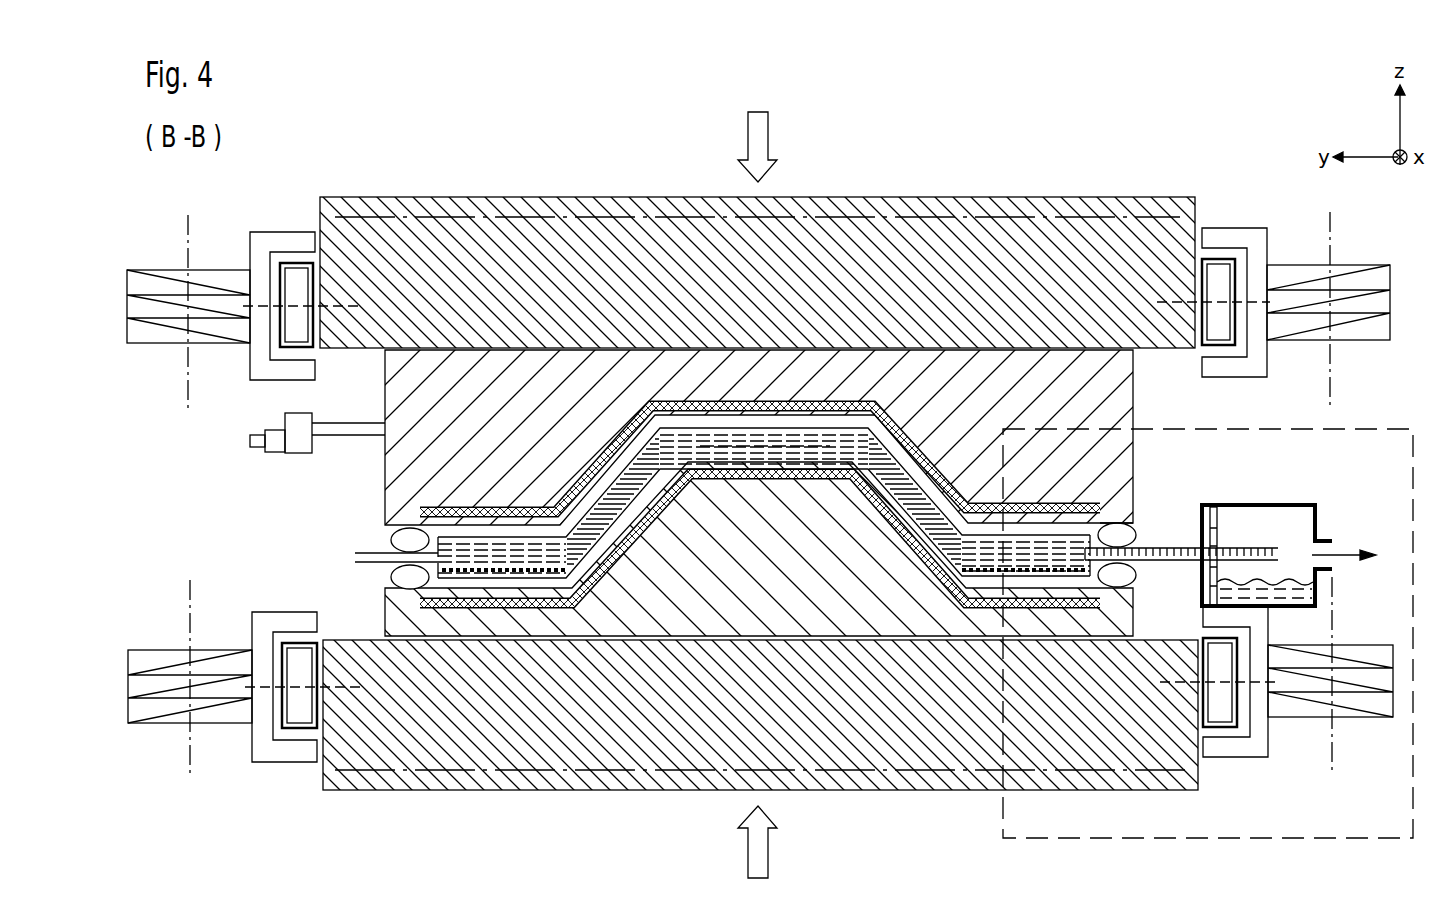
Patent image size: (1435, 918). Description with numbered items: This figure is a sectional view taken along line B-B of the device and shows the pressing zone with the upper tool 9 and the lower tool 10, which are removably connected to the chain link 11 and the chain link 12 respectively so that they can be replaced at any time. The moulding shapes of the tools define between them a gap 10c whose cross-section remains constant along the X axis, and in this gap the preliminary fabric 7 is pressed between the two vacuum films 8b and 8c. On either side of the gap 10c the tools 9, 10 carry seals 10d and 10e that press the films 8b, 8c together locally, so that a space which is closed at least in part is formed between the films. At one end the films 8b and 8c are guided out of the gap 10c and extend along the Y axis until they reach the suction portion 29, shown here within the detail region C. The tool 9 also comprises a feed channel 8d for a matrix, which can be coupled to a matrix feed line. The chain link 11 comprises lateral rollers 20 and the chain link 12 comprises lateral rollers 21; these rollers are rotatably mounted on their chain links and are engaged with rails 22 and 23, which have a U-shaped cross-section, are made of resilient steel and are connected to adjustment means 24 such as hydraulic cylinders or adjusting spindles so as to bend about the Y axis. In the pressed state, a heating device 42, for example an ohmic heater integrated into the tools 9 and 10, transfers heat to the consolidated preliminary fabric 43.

The chain link 11 is at (885, 205).
The chain link 12 is at (890, 778).
The tool 9 is at (1118, 386).
The tool 10 is at (1125, 605).
The preliminary fabric 7 is at (498, 555).
The heating device 42 is at (430, 512).
The consolidated preliminary fabric 43 is at (733, 440).
The vacuum film 8b is at (360, 553).
The vacuum film 8c is at (360, 562).
The feed channel 8d is at (348, 423).
The gap 10c is at (1134, 507).
The seal 10d is at (408, 540).
The seal 10e is at (408, 577).
The lateral roller 20 is at (298, 275).
The lateral roller 21 is at (300, 718).
The rail 22 is at (265, 232).
The rail 23 is at (270, 762).
The adjustment means 24 is at (1357, 265).
The suction portion 29 is at (1282, 503).
The detail region C is at (1050, 840).